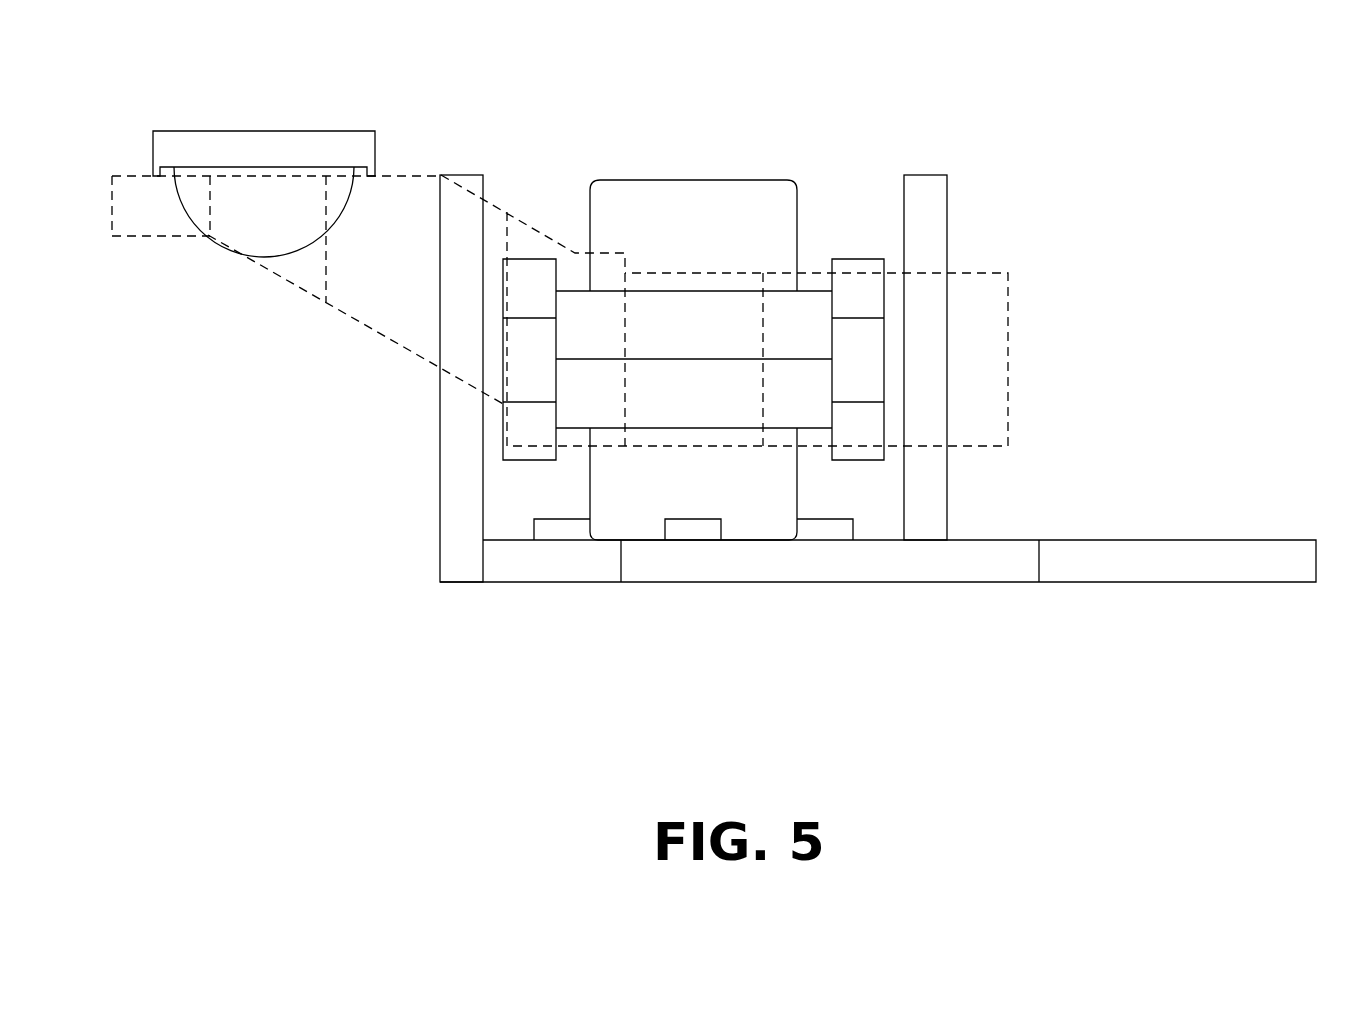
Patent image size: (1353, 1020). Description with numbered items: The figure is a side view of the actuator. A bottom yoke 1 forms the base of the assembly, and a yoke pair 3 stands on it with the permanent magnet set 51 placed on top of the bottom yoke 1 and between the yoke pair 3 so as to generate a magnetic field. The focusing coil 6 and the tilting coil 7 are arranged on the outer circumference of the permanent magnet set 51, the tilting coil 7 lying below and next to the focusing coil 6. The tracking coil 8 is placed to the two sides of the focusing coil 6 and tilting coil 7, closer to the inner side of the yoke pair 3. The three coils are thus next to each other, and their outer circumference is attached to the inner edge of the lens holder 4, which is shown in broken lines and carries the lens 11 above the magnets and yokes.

The bottom yoke 1 is at (1160, 570).
The yoke pair 3 is at (463, 200).
The lens holder 4 is at (383, 318).
The focusing coil 6 is at (710, 312).
The tilting coil 7 is at (578, 413).
The tracking coil 8 is at (533, 275).
The lens 11 is at (170, 149).
The permanent magnet set 51 is at (655, 215).